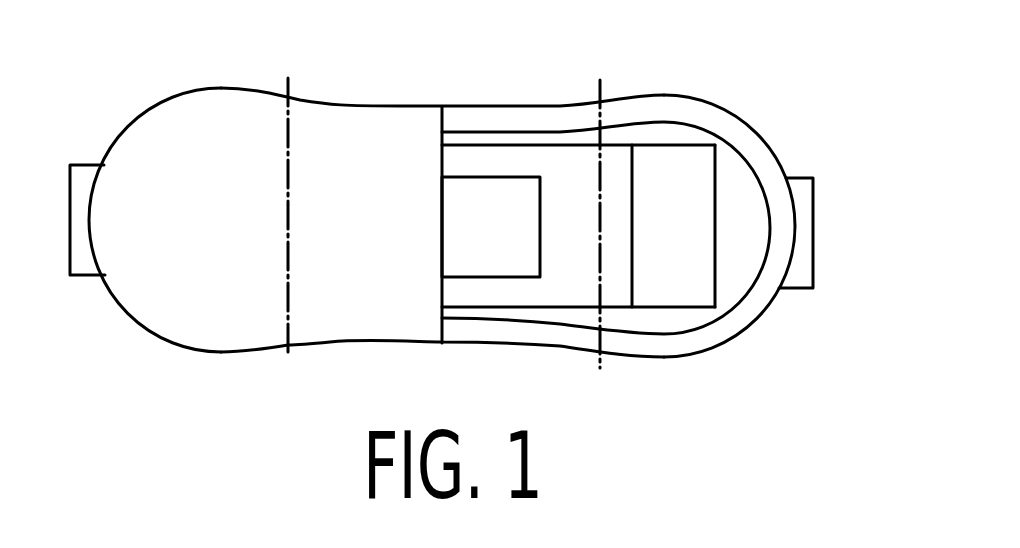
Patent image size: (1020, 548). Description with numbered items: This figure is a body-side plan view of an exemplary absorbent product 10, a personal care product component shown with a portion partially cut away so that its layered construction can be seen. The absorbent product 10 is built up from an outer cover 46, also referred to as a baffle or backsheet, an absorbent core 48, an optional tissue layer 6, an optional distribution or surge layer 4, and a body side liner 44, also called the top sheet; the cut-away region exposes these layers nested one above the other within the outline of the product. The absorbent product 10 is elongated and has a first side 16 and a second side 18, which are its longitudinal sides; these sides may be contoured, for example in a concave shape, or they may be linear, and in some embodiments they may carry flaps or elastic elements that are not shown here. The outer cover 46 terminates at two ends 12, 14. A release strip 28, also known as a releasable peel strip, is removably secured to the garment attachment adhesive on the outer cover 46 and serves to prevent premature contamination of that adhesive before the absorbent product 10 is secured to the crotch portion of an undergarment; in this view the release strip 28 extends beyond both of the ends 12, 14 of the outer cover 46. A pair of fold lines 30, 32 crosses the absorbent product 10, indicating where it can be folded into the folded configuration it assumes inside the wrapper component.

The distribution layer 4 is at (502, 255).
The tissue layer 6 is at (613, 282).
The absorbent product 10 is at (444, 212).
The end of the outer cover 12 is at (93, 238).
The end of the outer cover 14 is at (795, 212).
The first side 16 is at (373, 341).
The second side 18 is at (398, 106).
The release strip 28 is at (85, 165).
The fold line 30 is at (286, 79).
The fold line 32 is at (600, 80).
The body side liner 44 is at (210, 303).
The outer cover 46 is at (628, 97).
The absorbent core 48 is at (650, 137).